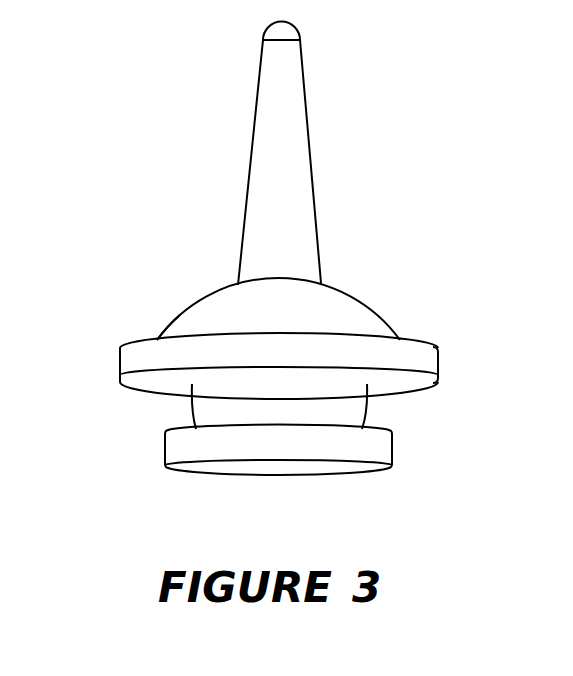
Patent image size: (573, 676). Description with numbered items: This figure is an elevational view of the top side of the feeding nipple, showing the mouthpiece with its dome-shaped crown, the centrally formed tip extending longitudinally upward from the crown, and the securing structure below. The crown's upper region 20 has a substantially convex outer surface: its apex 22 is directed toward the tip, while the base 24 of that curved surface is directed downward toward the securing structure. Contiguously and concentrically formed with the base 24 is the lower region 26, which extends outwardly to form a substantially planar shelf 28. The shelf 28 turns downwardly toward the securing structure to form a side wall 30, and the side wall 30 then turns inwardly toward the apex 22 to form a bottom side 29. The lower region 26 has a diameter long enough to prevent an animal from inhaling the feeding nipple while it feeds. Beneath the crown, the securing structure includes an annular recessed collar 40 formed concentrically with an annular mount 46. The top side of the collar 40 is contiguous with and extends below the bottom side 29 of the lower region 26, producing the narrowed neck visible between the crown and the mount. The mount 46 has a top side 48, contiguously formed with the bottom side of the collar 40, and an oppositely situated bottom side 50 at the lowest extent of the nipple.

The upper region 20 is at (342, 283).
The apex 22 is at (218, 291).
The base 24 is at (157, 338).
The lower region 26 is at (449, 372).
The shelf 28 is at (419, 343).
The bottom side 29 is at (406, 385).
The side wall 30 is at (140, 362).
The annular recessed collar 40 is at (186, 410).
The annular mount 46 is at (146, 462).
The top side 48 is at (393, 422).
The bottom side 50 is at (266, 470).